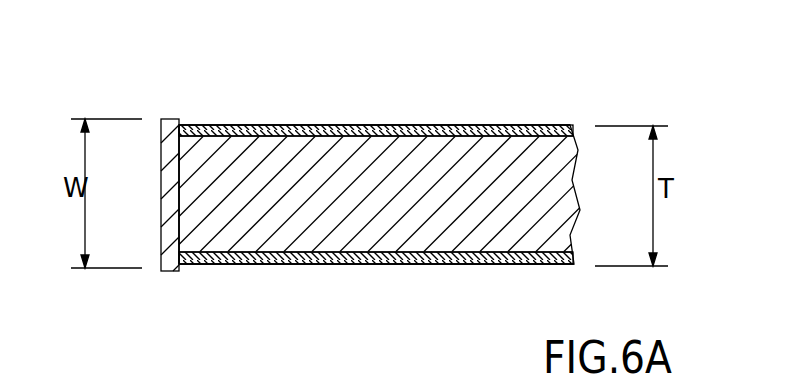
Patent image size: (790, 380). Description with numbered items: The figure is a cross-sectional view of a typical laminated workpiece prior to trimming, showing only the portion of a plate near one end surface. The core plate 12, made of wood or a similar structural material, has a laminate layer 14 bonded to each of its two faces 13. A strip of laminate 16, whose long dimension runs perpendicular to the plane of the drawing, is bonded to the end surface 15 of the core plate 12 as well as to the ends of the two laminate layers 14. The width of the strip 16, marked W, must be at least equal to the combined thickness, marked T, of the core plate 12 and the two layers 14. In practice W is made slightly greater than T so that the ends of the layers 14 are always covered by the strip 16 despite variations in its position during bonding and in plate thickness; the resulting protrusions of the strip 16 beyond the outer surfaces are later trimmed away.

The core plate 12 is at (485, 180).
The faces 13 is at (380, 125).
The laminate layer 14 is at (282, 125).
The end surface 15 is at (178, 231).
The strip of laminate 16 is at (170, 195).